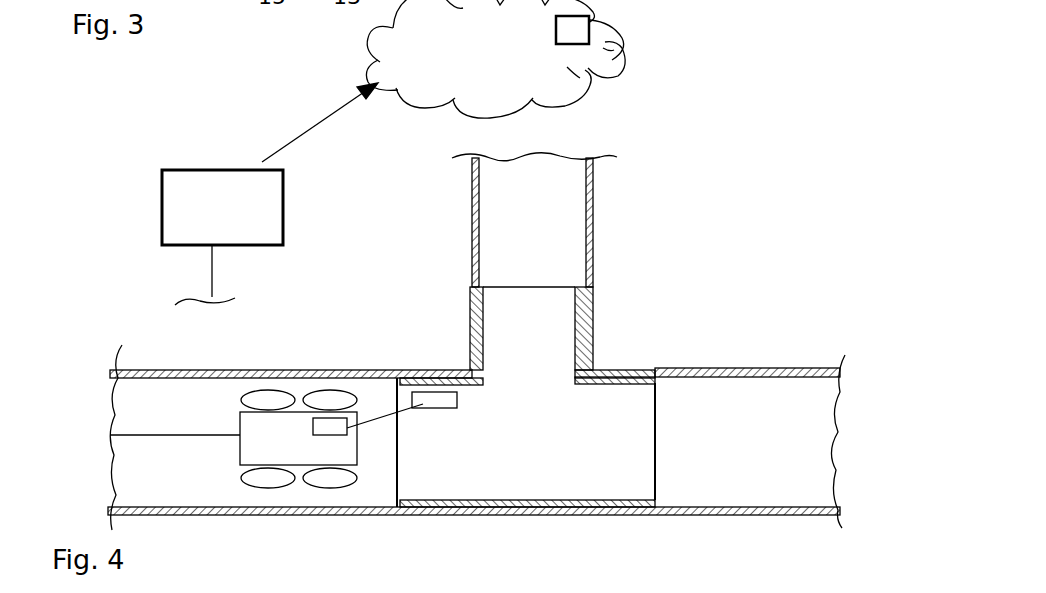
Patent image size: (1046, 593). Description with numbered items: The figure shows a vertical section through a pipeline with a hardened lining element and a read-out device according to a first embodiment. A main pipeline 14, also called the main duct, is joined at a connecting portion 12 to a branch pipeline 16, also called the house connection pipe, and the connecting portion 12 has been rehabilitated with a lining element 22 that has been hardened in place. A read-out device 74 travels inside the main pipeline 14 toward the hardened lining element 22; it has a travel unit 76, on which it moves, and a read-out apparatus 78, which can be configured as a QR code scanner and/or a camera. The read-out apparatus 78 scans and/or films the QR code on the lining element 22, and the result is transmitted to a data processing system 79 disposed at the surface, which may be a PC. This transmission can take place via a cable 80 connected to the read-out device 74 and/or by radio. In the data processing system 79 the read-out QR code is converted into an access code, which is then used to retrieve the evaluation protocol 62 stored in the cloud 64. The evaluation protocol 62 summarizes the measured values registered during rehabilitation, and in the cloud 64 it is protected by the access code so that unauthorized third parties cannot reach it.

The connecting portion 12 is at (607, 333).
The main pipeline 14 is at (730, 368).
The branch pipeline 16 is at (591, 203).
The lining element 22 is at (620, 368).
The evaluation protocol 62 is at (567, 31).
The cloud 64 is at (604, 60).
The read-out device 74 is at (305, 392).
The travel unit 76 is at (267, 490).
The read-out apparatus 78 is at (336, 425).
The data processing system 79 is at (195, 190).
The cable 80 is at (160, 434).